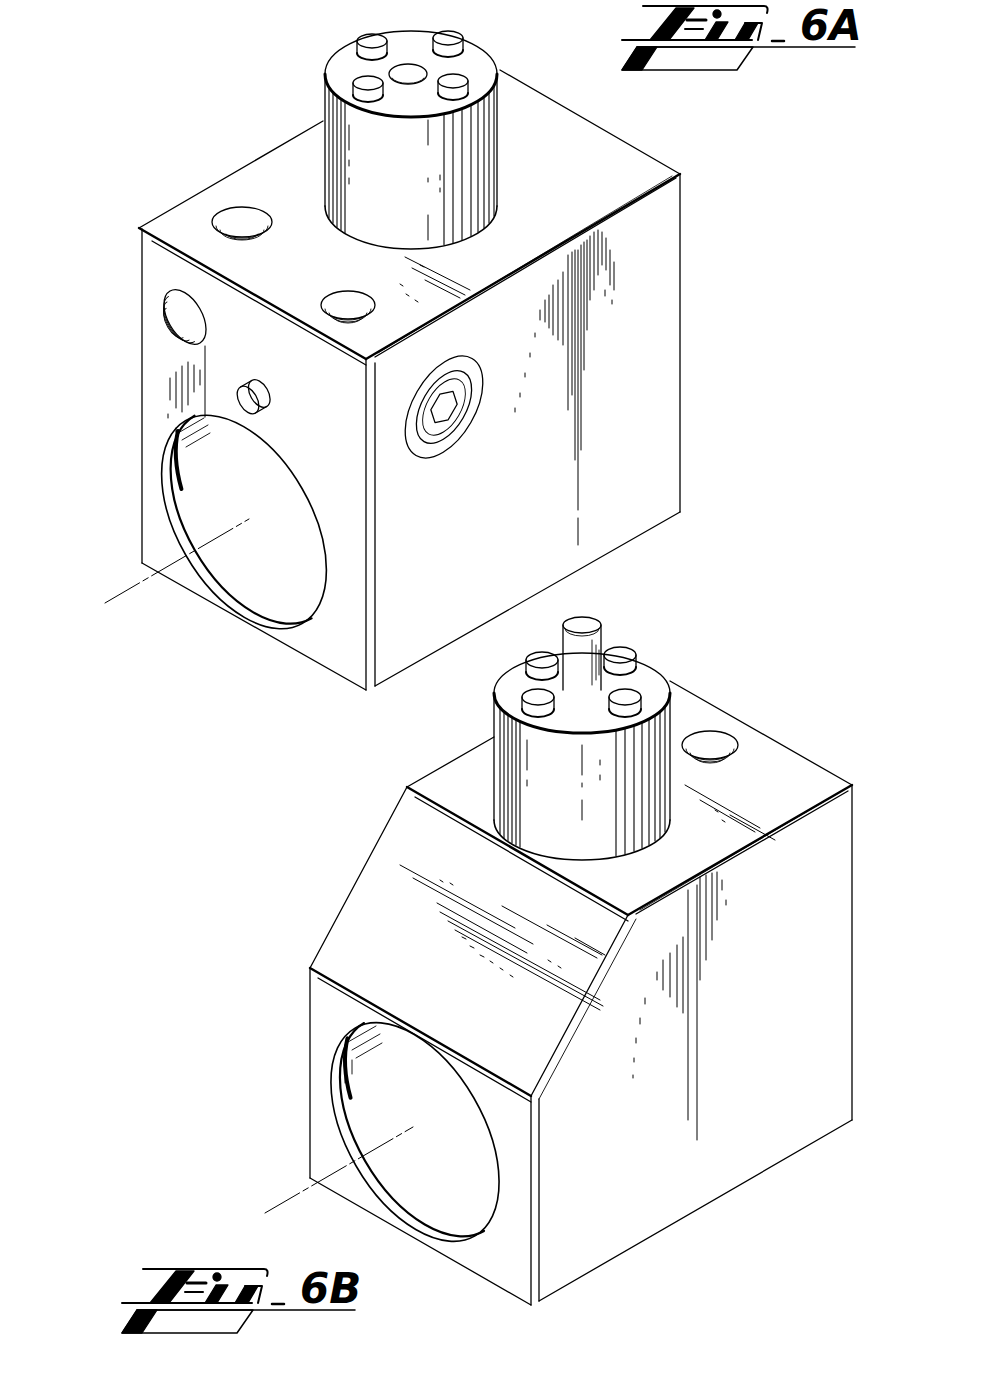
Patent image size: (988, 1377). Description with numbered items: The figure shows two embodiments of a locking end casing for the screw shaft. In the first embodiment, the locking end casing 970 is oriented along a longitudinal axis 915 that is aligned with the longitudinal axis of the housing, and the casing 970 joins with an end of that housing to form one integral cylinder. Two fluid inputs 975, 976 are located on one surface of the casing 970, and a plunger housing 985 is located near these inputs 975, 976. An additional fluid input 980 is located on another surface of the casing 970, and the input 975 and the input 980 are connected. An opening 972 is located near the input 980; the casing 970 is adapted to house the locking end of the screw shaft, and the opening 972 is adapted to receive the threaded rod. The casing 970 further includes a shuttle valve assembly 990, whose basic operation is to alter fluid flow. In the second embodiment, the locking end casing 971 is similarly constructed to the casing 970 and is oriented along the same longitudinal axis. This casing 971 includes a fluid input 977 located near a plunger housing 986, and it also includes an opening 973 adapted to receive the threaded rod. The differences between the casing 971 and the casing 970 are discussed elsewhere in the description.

In FIG. 6A, the locking end casing 970 is at (84, 172).
In FIG. 6B, the locking end casing 971 is at (285, 826).
In FIG. 6A, the opening 972 is at (185, 474).
In FIG. 6B, the opening 973 is at (364, 1103).
In FIG. 6A, the fluid input 975 is at (230, 210).
In FIG. 6A, the fluid input 976 is at (336, 294).
In FIG. 6B, the fluid input 977 is at (714, 733).
In FIG. 6A, the fluid input 980 is at (166, 317).
In FIG. 6A, the plunger housing 985 is at (473, 44).
In FIG. 6B, the plunger housing 986 is at (647, 657).
In FIG. 6A, the shuttle valve assembly 990 is at (447, 415).
In FIG. 6A, the longitudinal axis 915 is at (118, 594).
In FIG. 6B, the longitudinal axis 915 is at (287, 1203).